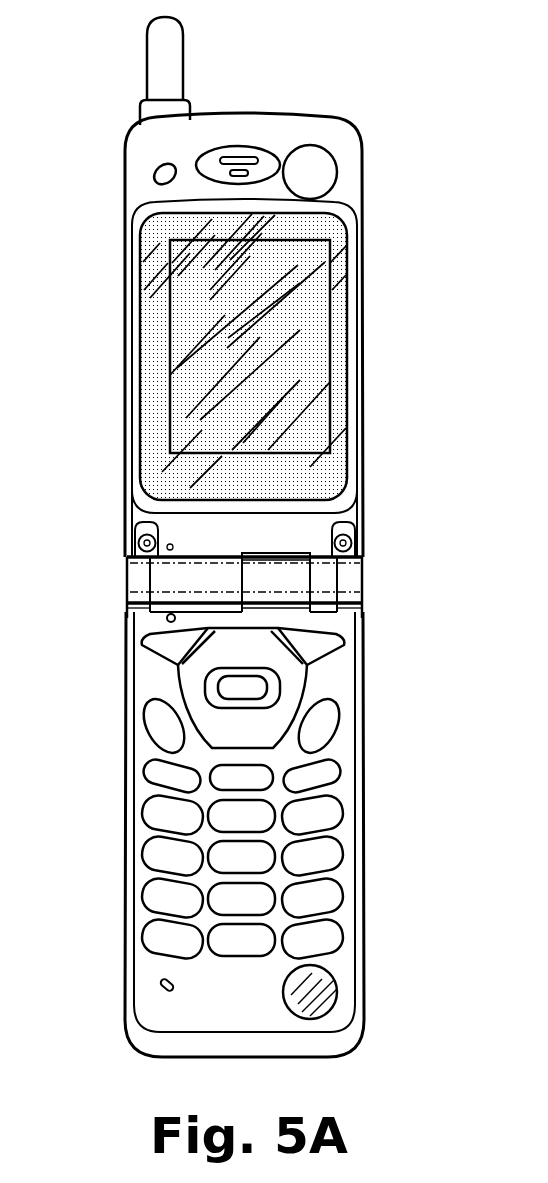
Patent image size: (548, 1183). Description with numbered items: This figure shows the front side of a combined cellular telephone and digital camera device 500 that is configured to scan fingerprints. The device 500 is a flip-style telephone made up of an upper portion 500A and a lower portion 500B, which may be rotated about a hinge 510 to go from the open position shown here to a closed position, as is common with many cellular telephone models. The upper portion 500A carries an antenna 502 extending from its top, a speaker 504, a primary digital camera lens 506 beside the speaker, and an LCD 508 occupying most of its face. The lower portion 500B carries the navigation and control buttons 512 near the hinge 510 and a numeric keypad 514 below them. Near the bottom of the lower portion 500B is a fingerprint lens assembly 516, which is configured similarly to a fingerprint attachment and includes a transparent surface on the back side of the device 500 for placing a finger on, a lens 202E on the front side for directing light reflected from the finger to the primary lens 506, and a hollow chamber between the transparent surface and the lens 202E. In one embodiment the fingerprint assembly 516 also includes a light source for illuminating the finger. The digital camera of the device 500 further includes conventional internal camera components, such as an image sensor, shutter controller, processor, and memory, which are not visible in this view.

The combined cellular telephone and digital camera device 500 is at (403, 103).
The upper portion 500A is at (114, 130).
The lower portion 500B is at (114, 611).
The antenna 502 is at (160, 50).
The speaker 504 is at (243, 156).
The primary digital camera lens 506 is at (337, 188).
The LCD 508 is at (337, 348).
The hinge 510 is at (352, 582).
The navigation and control buttons 512 is at (377, 628).
The numeric keypad 514 is at (377, 763).
The fingerprint lens assembly 516 is at (345, 988).
The lens 202E is at (312, 997).